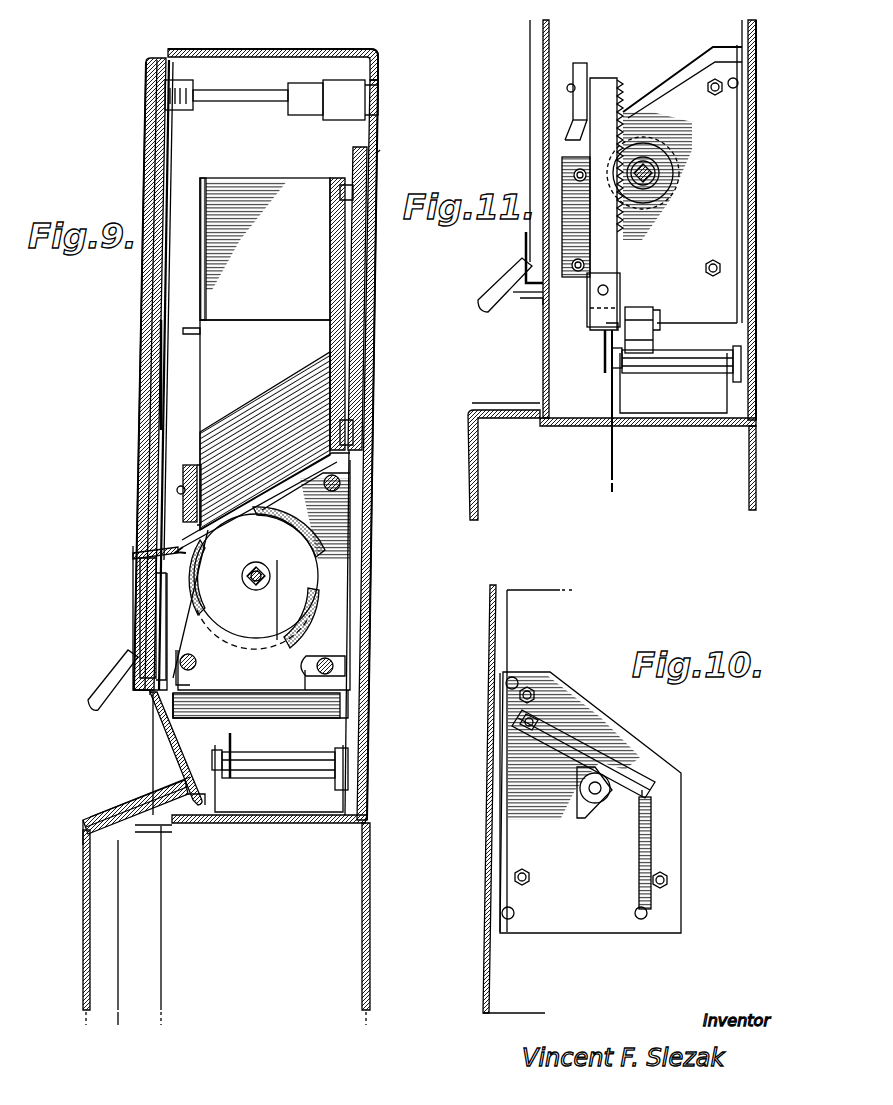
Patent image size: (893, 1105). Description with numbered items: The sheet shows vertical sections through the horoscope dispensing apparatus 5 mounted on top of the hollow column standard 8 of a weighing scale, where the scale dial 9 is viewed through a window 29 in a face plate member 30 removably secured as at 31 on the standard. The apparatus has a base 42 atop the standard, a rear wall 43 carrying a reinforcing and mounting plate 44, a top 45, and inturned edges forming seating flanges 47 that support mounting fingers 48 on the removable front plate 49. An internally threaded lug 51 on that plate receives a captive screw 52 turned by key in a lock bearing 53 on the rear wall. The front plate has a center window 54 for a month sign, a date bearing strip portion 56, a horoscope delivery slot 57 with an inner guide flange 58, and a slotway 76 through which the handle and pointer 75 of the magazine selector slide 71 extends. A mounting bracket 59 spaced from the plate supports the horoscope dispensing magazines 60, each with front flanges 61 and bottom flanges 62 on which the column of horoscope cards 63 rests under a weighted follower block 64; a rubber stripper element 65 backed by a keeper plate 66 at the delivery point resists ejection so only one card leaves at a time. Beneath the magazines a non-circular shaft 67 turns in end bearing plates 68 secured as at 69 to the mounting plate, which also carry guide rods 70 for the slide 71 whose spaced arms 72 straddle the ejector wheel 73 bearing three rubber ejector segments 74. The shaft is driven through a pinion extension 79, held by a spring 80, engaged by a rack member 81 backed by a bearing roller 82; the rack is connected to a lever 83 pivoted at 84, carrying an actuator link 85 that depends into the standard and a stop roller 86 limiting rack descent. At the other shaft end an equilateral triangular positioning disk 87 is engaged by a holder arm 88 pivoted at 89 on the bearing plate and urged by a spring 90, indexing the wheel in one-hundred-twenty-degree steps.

In FIG. 9, the horoscope dispensing apparatus 5 is at (383, 147).
In FIG. 11, the horoscope dispensing apparatus 5 is at (759, 123).
In FIG. 9, the pedestal or column standard 8 is at (373, 868).
In FIG. 9, the scale dial 9 is at (155, 897).
In FIG. 9, the window 29 is at (137, 795).
In FIG. 9, the face plate member 30 is at (90, 822).
In FIG. 11, the face plate member 30 is at (508, 414).
In FIG. 9, the securing means 31 is at (144, 827).
In FIG. 9, the base 42 is at (205, 822).
In FIG. 11, the base 42 is at (580, 428).
In FIG. 9, the rear wall 43 is at (368, 262).
In FIG. 11, the rear wall 43 is at (740, 222).
In FIG. 10, the rear wall 43 is at (490, 756).
In FIG. 9, the reinforcing and mounting plate 44 is at (374, 300).
In FIG. 11, the reinforcing and mounting plate 44 is at (748, 244).
In FIG. 10, the reinforcing and mounting plate 44 is at (506, 780).
In FIG. 9, the top 45 is at (274, 52).
In FIG. 9, the seating flanges 47 is at (188, 705).
In FIG. 11, the seating flanges 47 is at (528, 262).
In FIG. 9, the mounting fingers 48 is at (186, 668).
In FIG. 11, the mounting fingers 48 is at (543, 302).
In FIG. 9, the removable front plate 49 is at (172, 150).
In FIG. 11, the removable front plate 49 is at (528, 126).
In FIG. 9, the internally threaded lug 51 is at (210, 76).
In FIG. 9, the securing captive screw 52 is at (248, 92).
In FIG. 9, the lock bearing 53 is at (352, 82).
In FIG. 9, the center window 54 is at (160, 354).
In FIG. 9, the date bearing strip portion 56 is at (146, 600).
In FIG. 9, the horoscope delivery slot 57 is at (141, 560).
In FIG. 9, the guide flange 58 is at (160, 571).
In FIG. 9, the mounting bracket 59 is at (342, 356).
In FIG. 9, the horoscope dispensing magazines 60 is at (262, 185).
In FIG. 9, the front flanges 61 is at (206, 192).
In FIG. 9, the bottom flanges 62 is at (208, 538).
In FIG. 9, the horoscope cards or slips 63 is at (248, 402).
In FIG. 9, the weighted follower block 64 is at (265, 425).
In FIG. 9, the yieldable stripper or retainer element 65 is at (186, 513).
In FIG. 11, the yieldable stripper or retainer element 65 is at (578, 96).
In FIG. 9, the removable keeper plate 66 is at (182, 493).
In FIG. 11, the removable keeper plate 66 is at (572, 82).
In FIG. 9, the non-circular shaft 67 is at (259, 572).
In FIG. 10, the non-circular shaft 67 is at (600, 786).
In FIG. 9, the end bearing plates 68 is at (335, 582).
In FIG. 11, the end bearing plates 68 is at (720, 186).
In FIG. 10, the end bearing plates 68 is at (681, 816).
In FIG. 11, the securing means for bearing plates 69 is at (738, 82).
In FIG. 10, the securing means for bearing plates 69 is at (516, 680).
In FIG. 9, the guide rods 70 is at (194, 660).
In FIG. 10, the guide rods 70 is at (530, 878).
In FIG. 9, the magazine selector slide 71 is at (318, 697).
In FIG. 9, the spaced arms 72 is at (252, 589).
In FIG. 9, the ejector wheel 73 is at (303, 566).
In FIG. 9, the rubber ejector segments 74 is at (320, 532).
In FIG. 9, the handle and magazine selecting pointer 75 is at (130, 664).
In FIG. 11, the handle and magazine selecting pointer 75 is at (514, 270).
In FIG. 9, the slotway 76 is at (150, 688).
In FIG. 11, the pinion extension 79 is at (666, 156).
In FIG. 11, the spring 80 is at (659, 160).
In FIG. 11, the rack member 81 is at (605, 84).
In FIG. 11, the bearing roller 82 is at (562, 162).
In FIG. 9, the lever 83 is at (232, 748).
In FIG. 11, the lever 83 is at (652, 356).
In FIG. 9, the lever pivot 84 is at (292, 766).
In FIG. 11, the lever pivot 84 is at (686, 372).
In FIG. 11, the actuator link 85 is at (612, 445).
In FIG. 11, the stop roller 86 is at (642, 310).
In FIG. 10, the equilateral triangular positioning disk 87 is at (578, 810).
In FIG. 10, the holder arm 88 is at (600, 740).
In FIG. 10, the pivot 89 is at (540, 722).
In FIG. 10, the spring 90 is at (652, 846).